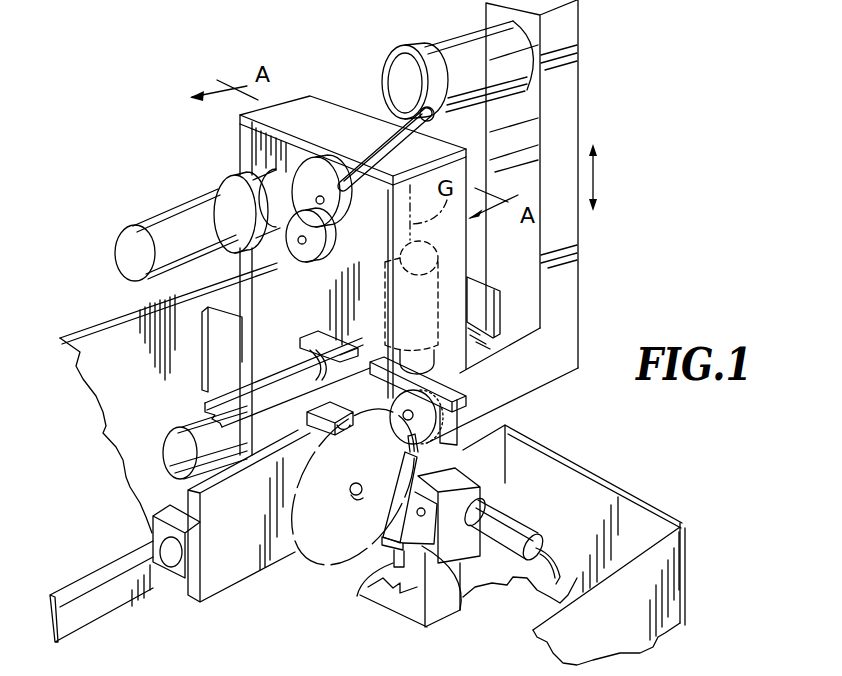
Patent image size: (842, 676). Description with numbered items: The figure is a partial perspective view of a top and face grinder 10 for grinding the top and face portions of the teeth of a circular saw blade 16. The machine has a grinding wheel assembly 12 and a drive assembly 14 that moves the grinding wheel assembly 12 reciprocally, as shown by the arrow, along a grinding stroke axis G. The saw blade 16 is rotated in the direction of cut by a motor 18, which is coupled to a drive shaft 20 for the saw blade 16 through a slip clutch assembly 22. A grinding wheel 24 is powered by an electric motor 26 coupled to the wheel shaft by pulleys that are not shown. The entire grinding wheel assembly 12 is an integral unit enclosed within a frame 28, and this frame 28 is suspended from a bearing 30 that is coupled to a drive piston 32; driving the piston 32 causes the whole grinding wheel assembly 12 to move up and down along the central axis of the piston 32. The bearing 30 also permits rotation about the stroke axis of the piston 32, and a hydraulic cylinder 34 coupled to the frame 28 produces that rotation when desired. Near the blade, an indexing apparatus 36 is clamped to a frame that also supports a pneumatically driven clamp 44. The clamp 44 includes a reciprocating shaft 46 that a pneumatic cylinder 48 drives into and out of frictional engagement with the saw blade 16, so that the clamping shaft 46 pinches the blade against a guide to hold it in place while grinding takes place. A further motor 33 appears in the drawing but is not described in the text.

The top and face grinder 10 is at (672, 60).
The grinding wheel assembly 12 is at (583, 295).
The drive assembly 14 is at (330, 110).
The circular saw blade 16 is at (335, 565).
The motor 18 is at (187, 427).
The drive shaft 20 is at (570, 90).
The slip clutch assembly 22 is at (257, 544).
The grinding wheel 24 is at (450, 428).
The electric motor 26 is at (445, 37).
The frame 28 is at (583, 353).
The bearing 30 is at (427, 362).
The drive piston 32 is at (397, 255).
The motor 33 is at (185, 202).
The hydraulic cylinder 34 is at (292, 372).
The indexing apparatus 36 is at (456, 605).
The pneumatically driven clamp 44 is at (475, 488).
The reciprocating shaft 46 is at (440, 450).
The pneumatic cylinder 48 is at (513, 532).